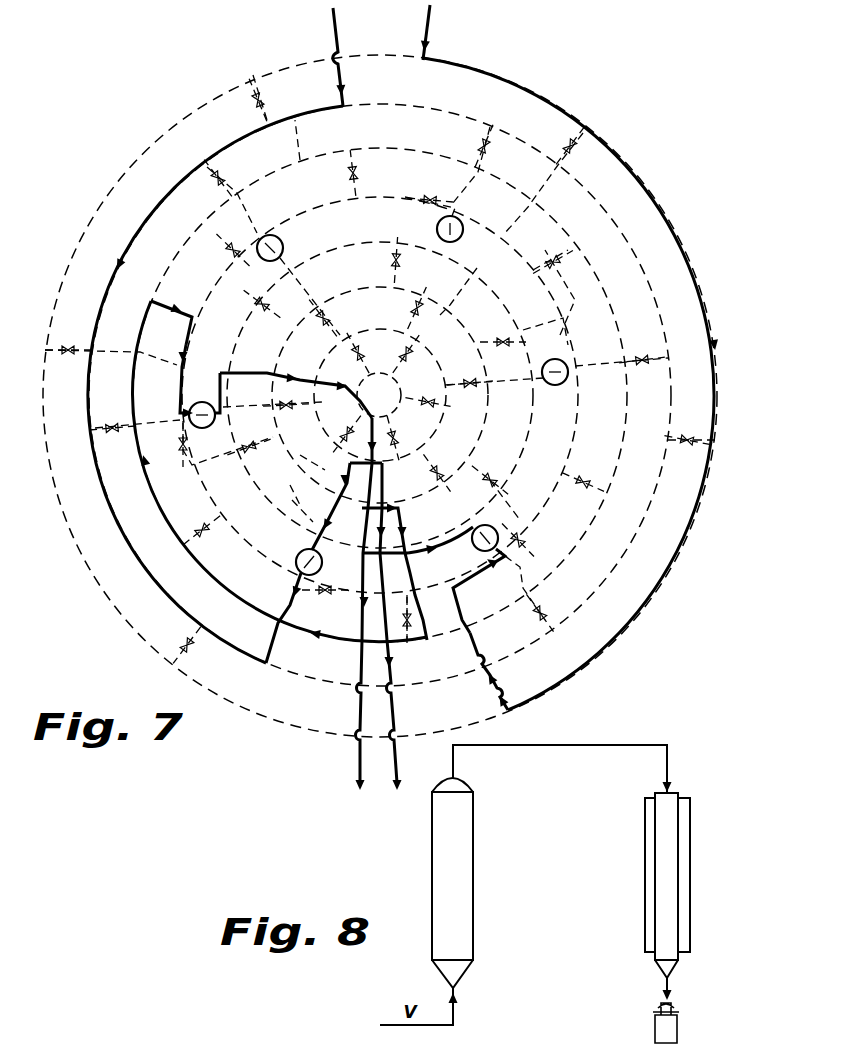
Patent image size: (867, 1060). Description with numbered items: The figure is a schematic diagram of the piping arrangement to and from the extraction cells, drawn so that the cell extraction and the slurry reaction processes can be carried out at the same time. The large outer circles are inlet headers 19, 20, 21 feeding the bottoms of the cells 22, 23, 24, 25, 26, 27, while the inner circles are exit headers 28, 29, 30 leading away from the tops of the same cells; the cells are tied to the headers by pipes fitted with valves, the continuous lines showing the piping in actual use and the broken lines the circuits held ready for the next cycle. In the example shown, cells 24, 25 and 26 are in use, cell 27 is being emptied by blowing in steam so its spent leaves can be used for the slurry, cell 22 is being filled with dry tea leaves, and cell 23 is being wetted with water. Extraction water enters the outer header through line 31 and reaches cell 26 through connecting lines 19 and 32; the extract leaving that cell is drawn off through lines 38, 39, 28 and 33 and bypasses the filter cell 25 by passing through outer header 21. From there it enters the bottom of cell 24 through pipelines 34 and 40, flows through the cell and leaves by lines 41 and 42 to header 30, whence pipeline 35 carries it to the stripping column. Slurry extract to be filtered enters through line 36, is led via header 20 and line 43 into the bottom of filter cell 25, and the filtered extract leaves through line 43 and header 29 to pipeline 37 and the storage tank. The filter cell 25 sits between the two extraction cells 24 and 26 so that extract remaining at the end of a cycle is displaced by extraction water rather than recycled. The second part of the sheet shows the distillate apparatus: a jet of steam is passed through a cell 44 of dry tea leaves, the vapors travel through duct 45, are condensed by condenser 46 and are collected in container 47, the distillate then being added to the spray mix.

In FIG. 7, the outer header 19 is at (557, 104).
In FIG. 7, the outer header 20 is at (168, 193).
In FIG. 7, the outer header 21 is at (160, 513).
In FIG. 7, the cell 22 is at (463, 234).
In FIG. 7, the cell 23 is at (283, 242).
In FIG. 7, the cell 24 is at (202, 402).
In FIG. 7, the filter cell 25 is at (298, 554).
In FIG. 7, the cell 26 is at (487, 525).
In FIG. 7, the cell 27 is at (555, 385).
In FIG. 7, the exit header 28 is at (383, 503).
In FIG. 7, the exit header 29 is at (364, 440).
In FIG. 7, the exit header 30 is at (379, 395).
In FIG. 7, the line 31 is at (428, 22).
In FIG. 7, the connecting line 32 is at (472, 641).
In FIG. 7, the line 33 is at (458, 598).
In FIG. 7, the pipeline 34 is at (165, 297).
In FIG. 7, the pipeline 35 is at (355, 762).
In FIG. 7, the line 36 is at (336, 26).
In FIG. 7, the pipeline 37 is at (398, 760).
In FIG. 7, the line 38 is at (428, 488).
In FIG. 7, the line 39 is at (332, 506).
In FIG. 7, the pipeline 40 is at (177, 389).
In FIG. 7, the line 41 is at (221, 389).
In FIG. 7, the line 42 is at (283, 385).
In FIG. 7, the line 43 is at (295, 606).
In FIG. 8, the separator vessel 44 is at (468, 878).
In FIG. 8, the duct 45 is at (575, 745).
In FIG. 8, the condenser 46 is at (655, 885).
In FIG. 8, the container 47 is at (655, 1022).